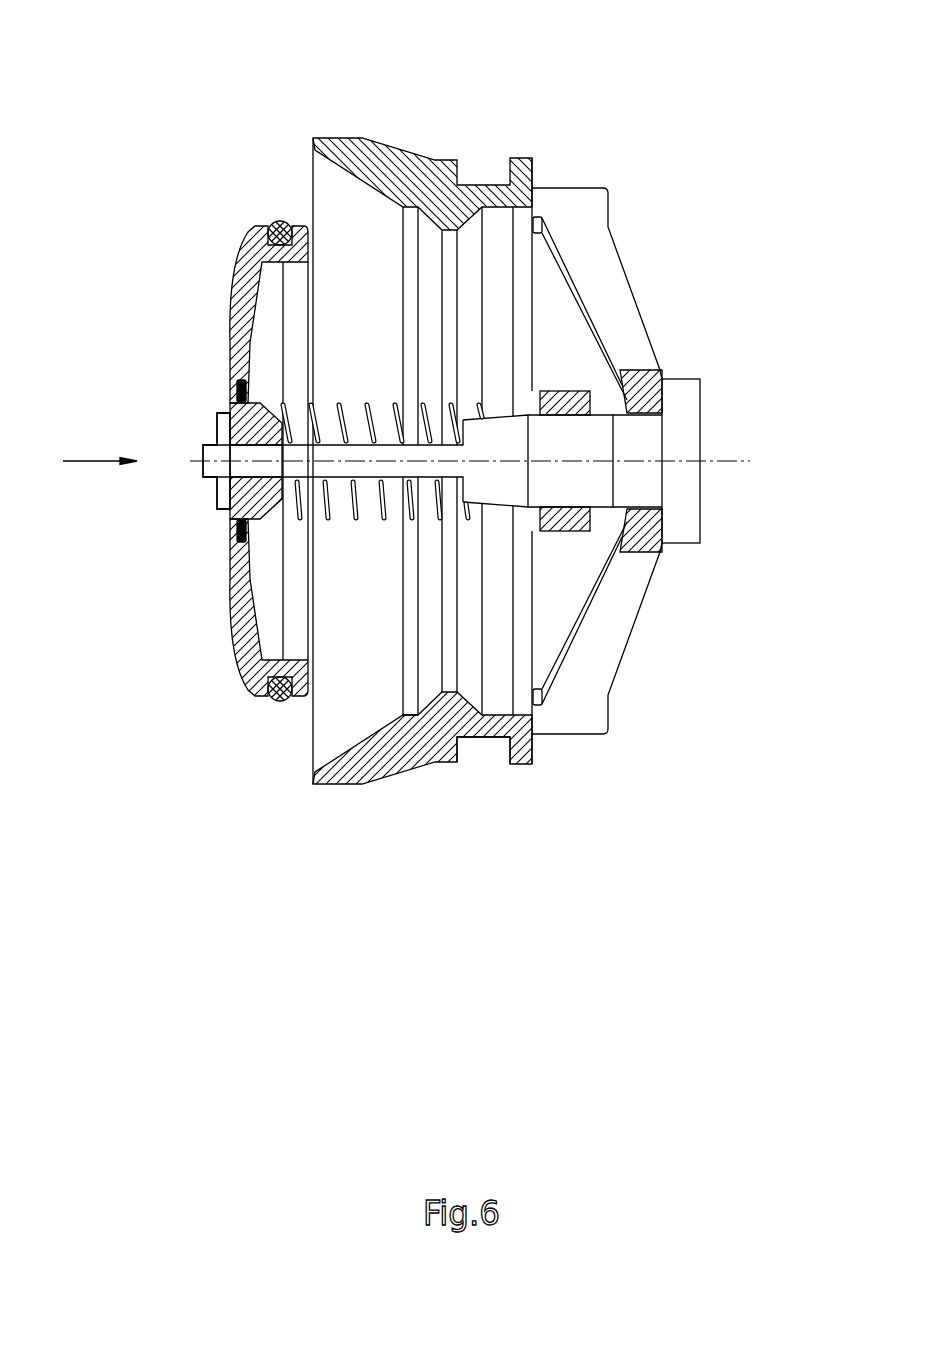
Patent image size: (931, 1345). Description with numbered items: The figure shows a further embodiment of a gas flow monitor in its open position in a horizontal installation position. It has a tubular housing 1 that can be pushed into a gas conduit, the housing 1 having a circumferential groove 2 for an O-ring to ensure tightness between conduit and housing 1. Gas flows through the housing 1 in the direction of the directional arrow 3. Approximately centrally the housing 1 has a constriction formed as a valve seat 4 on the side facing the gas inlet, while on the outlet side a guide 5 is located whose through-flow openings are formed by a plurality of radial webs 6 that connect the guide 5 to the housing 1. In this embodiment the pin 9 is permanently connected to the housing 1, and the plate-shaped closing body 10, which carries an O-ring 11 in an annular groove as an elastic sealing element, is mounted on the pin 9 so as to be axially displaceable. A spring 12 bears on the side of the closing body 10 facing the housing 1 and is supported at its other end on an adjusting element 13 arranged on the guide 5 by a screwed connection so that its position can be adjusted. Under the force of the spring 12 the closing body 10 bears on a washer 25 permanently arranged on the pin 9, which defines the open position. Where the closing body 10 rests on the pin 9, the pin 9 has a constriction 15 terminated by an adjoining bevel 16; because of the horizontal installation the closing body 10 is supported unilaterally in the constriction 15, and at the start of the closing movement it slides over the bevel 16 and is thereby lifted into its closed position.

The housing 1 is at (373, 760).
The circumferential groove 2 is at (485, 752).
The directional arrow 3 is at (88, 461).
The valve seat 4 is at (430, 700).
The guide 5 is at (586, 479).
The radial webs 6 is at (592, 703).
The pin 9 is at (333, 461).
The closing body 10 is at (237, 562).
The O-ring 11 is at (297, 519).
The spring 12 is at (280, 689).
The adjusting element 13 is at (568, 518).
The constriction 15 is at (252, 455).
The bevel 16 is at (246, 393).
The washer 25 is at (223, 488).